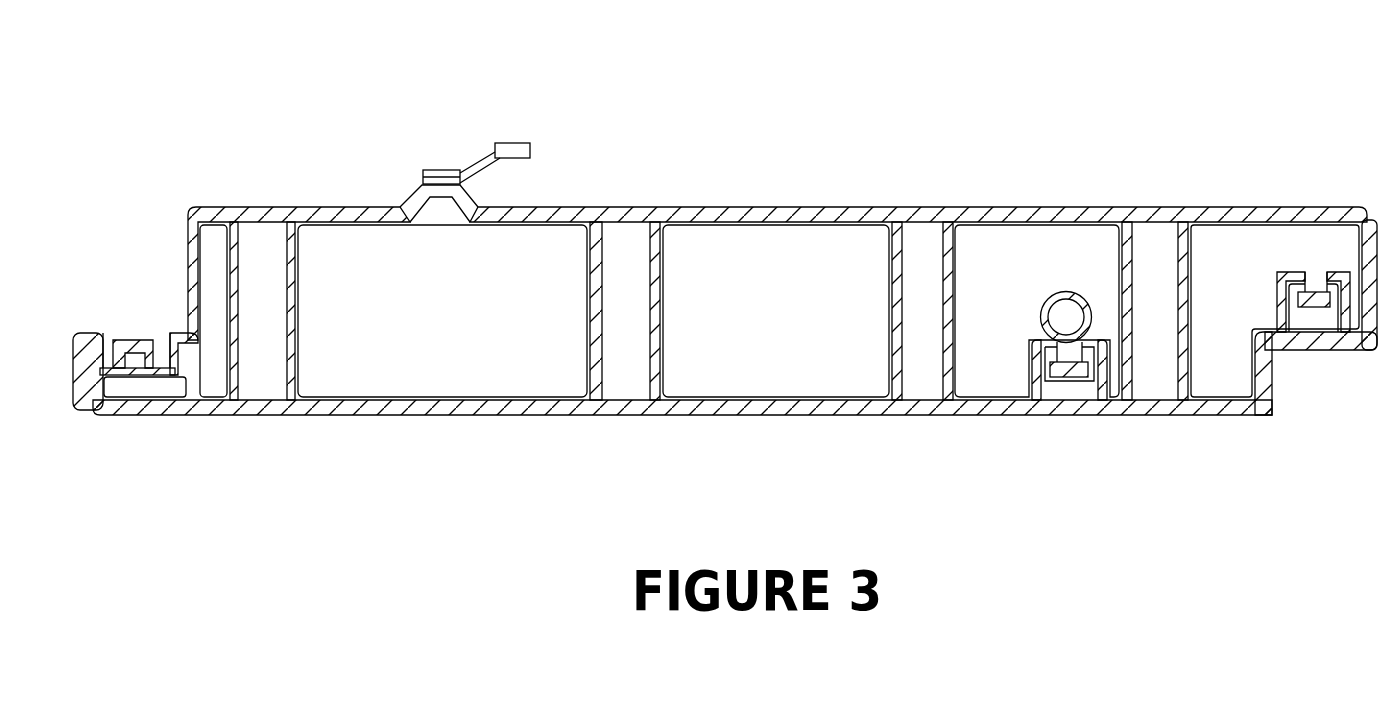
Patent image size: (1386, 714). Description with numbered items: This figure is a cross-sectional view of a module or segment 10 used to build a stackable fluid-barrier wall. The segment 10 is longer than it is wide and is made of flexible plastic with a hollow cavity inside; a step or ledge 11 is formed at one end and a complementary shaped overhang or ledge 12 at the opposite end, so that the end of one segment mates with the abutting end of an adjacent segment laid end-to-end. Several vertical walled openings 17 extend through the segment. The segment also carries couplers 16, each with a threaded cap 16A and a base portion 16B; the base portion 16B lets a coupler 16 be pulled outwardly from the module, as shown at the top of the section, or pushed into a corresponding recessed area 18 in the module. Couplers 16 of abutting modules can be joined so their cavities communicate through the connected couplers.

The segment 10 is at (672, 100).
The step 11 is at (80, 337).
The overhang 12 is at (1347, 346).
The coupler 16 is at (1065, 390).
The threaded cap 16A is at (127, 337).
The base portion 16B is at (427, 158).
The vertical walled openings 17 is at (257, 233).
The recessed area 18 is at (118, 340).